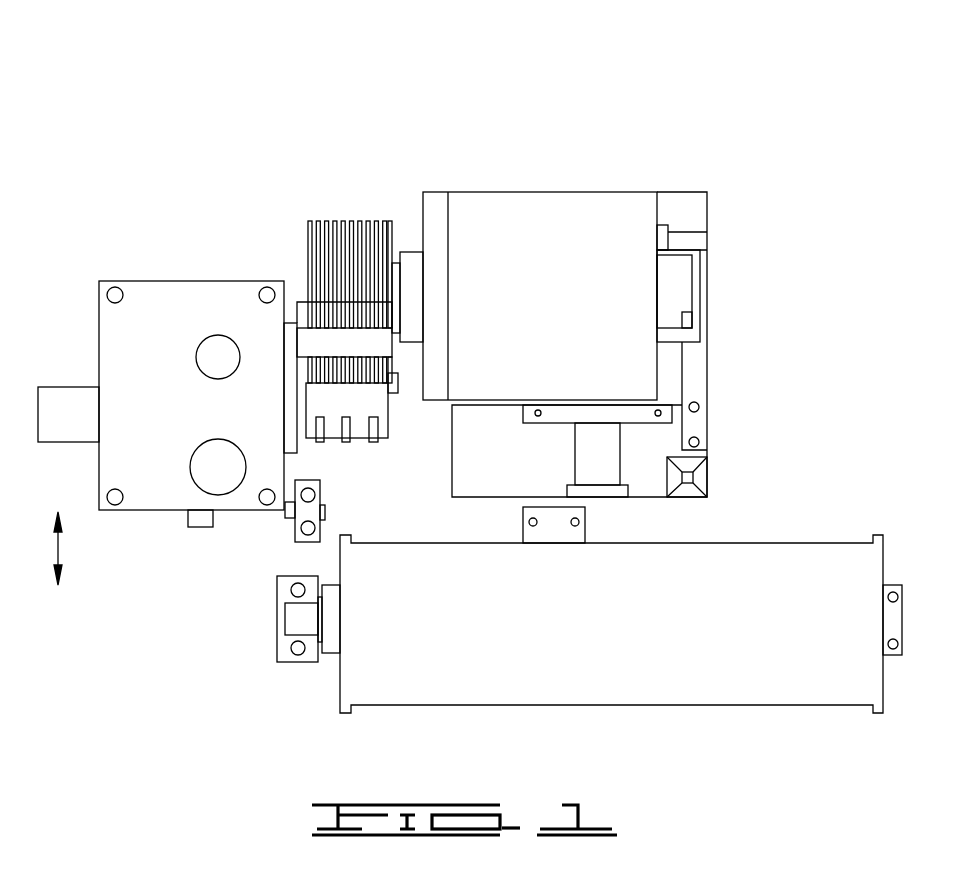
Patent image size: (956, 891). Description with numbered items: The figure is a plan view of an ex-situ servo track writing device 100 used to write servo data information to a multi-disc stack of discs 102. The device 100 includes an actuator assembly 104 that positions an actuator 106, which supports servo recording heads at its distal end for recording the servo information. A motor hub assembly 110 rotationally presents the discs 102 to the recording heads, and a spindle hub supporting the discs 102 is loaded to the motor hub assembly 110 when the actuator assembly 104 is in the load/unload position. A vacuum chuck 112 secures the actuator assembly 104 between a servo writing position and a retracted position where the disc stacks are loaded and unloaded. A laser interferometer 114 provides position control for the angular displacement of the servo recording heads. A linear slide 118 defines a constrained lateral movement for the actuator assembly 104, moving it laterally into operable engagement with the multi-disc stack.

The ex-situ servo track writing device 100 is at (680, 103).
The discs 102 is at (335, 220).
The actuator assembly 104 is at (162, 305).
The actuator 106 is at (355, 438).
The motor hub assembly 110 is at (545, 216).
The vacuum chuck 112 is at (715, 695).
The laser interferometer 114 is at (292, 538).
The linear slide 118 is at (200, 527).